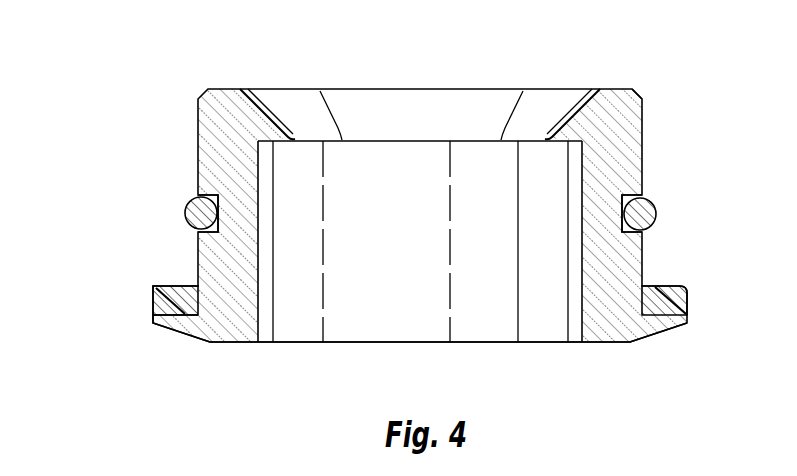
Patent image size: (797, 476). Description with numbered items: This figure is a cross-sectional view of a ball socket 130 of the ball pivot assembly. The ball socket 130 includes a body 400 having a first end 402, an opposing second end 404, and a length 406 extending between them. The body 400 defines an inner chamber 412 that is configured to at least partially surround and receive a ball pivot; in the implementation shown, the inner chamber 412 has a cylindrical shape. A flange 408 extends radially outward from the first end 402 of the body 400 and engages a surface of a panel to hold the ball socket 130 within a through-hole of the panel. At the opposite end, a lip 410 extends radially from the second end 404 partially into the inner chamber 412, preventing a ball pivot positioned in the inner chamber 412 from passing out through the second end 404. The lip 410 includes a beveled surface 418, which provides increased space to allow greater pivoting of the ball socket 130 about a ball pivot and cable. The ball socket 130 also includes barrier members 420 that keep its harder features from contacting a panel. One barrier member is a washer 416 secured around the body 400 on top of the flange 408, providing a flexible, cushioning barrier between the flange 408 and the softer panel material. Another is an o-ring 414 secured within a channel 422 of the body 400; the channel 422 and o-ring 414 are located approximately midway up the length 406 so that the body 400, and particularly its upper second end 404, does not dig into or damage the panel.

The ball socket 130 is at (393, 215).
The body 400 is at (643, 137).
The first end 402 is at (634, 347).
The second end 404 is at (643, 86).
The length 406 is at (667, 187).
The flange 408 is at (170, 323).
The lip 410 is at (287, 138).
The inner chamber 412 is at (336, 313).
The o-ring 414 is at (185, 215).
The washer 416 is at (152, 302).
The beveled surface 418 is at (443, 140).
The barrier members 420 is at (118, 234).
The channel 422 is at (145, 201).